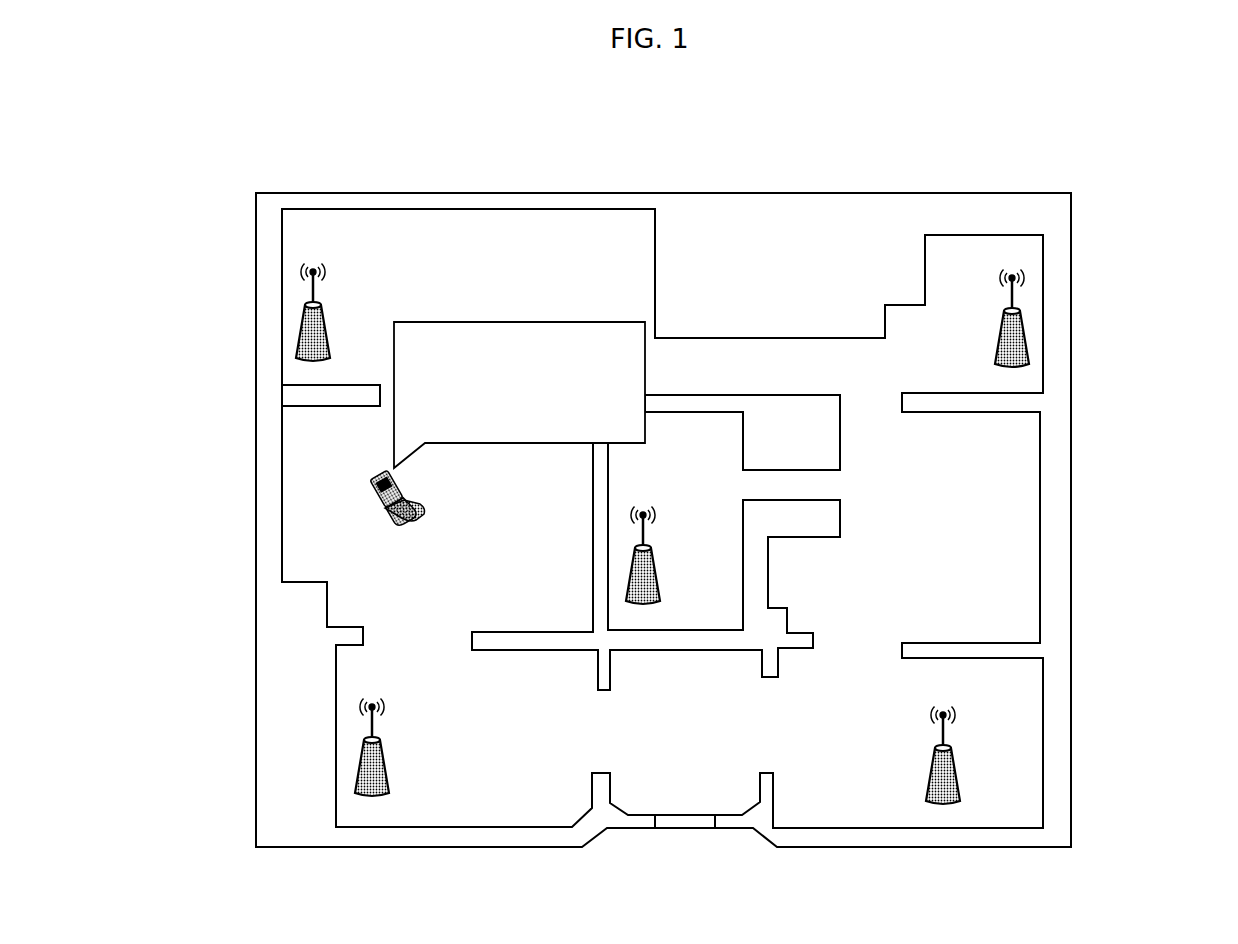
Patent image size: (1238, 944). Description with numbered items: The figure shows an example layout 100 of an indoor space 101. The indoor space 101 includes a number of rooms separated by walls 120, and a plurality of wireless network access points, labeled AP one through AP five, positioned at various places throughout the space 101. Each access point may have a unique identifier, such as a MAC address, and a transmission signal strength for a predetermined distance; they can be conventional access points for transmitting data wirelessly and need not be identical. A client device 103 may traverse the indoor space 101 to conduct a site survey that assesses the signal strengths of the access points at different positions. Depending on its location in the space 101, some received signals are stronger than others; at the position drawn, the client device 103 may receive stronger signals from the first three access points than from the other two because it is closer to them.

The layout 100 is at (1200, 52).
The indoor space 101 is at (256, 185).
The client device 103 is at (392, 517).
The walls 120 is at (687, 652).